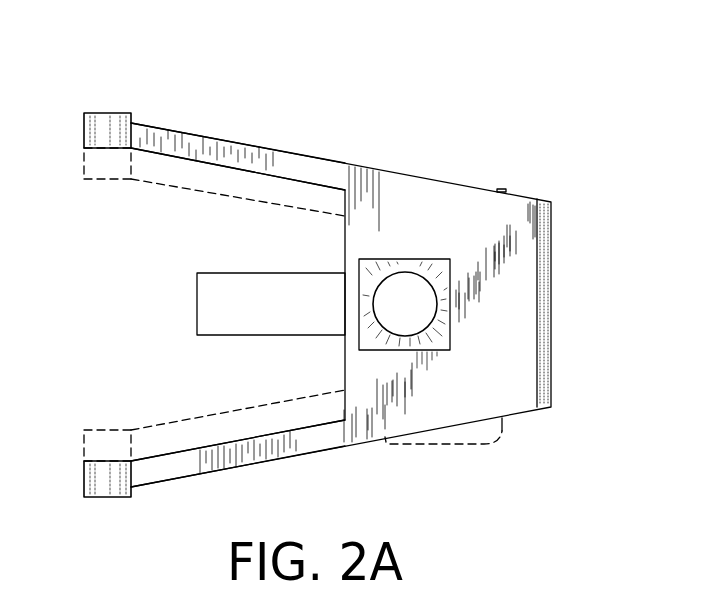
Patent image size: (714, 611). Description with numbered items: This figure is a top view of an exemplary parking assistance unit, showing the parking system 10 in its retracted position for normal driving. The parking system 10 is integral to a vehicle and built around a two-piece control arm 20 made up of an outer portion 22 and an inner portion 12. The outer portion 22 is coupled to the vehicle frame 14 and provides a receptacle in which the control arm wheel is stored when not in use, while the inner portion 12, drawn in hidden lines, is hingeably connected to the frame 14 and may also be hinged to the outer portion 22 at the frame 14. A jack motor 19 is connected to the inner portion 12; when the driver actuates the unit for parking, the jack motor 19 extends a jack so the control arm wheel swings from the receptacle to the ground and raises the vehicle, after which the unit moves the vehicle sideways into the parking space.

The parking system 10 is at (388, 124).
The inner portion 12 is at (197, 419).
The vehicle frame 14 is at (100, 129).
The jack motor 19 is at (205, 302).
The control arm 20 is at (447, 212).
The outer portion 22 is at (258, 153).